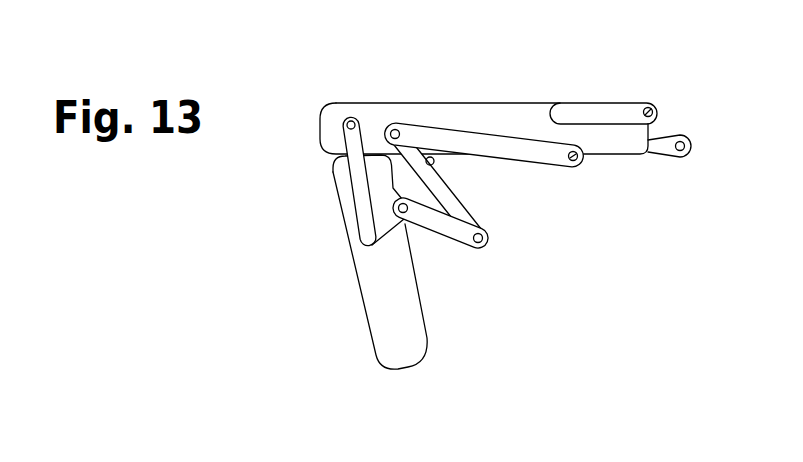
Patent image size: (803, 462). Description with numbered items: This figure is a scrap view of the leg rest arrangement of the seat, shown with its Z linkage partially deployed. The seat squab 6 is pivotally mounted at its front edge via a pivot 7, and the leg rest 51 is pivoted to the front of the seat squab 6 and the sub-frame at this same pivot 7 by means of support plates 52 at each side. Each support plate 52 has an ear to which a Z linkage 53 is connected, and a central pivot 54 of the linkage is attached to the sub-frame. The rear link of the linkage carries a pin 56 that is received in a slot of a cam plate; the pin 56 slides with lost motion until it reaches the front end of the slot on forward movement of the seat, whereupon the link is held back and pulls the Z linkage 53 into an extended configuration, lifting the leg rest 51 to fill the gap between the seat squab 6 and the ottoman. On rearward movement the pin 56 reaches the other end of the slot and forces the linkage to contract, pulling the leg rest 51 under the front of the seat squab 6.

The seat squab 6 is at (518, 114).
The pivot 7 is at (349, 119).
The leg rest 51 is at (387, 333).
The support plates 52 is at (377, 217).
The Z linkage 53 is at (503, 210).
The central pivot 54 is at (452, 172).
The pin 56 is at (470, 140).